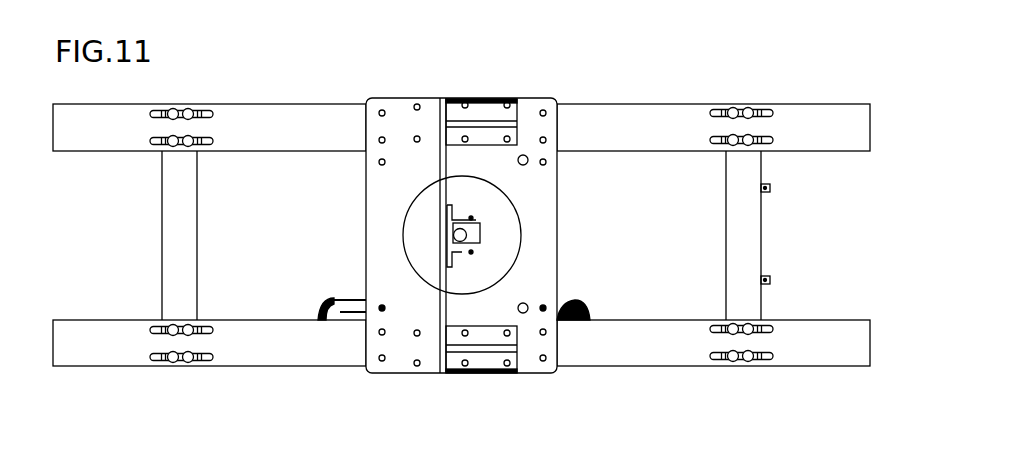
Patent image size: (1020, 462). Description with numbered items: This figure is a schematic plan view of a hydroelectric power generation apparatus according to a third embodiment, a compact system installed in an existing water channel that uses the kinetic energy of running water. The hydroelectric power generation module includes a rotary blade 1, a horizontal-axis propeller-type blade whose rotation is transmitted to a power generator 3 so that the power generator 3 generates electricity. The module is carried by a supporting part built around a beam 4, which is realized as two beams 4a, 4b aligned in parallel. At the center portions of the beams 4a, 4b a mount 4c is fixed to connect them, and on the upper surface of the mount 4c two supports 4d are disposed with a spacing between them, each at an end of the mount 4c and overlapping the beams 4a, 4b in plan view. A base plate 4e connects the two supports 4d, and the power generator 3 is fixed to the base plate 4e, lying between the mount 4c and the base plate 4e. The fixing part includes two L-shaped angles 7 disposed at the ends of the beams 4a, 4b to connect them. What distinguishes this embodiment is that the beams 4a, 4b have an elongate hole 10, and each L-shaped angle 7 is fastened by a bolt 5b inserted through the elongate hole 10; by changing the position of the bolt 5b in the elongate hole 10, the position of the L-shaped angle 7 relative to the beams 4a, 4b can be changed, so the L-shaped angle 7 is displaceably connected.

The rotary blade 1 is at (349, 302).
The power generator 3 is at (503, 213).
The beam 4 is at (84, 178).
The beam 4a is at (137, 333).
The beam 4b is at (137, 140).
The mount 4c is at (547, 272).
The support 4d is at (488, 122).
The base plate 4e is at (440, 175).
The bolt 5b is at (735, 360).
The L-shaped angle 7 is at (188, 226).
The elongate hole 10 is at (720, 360).